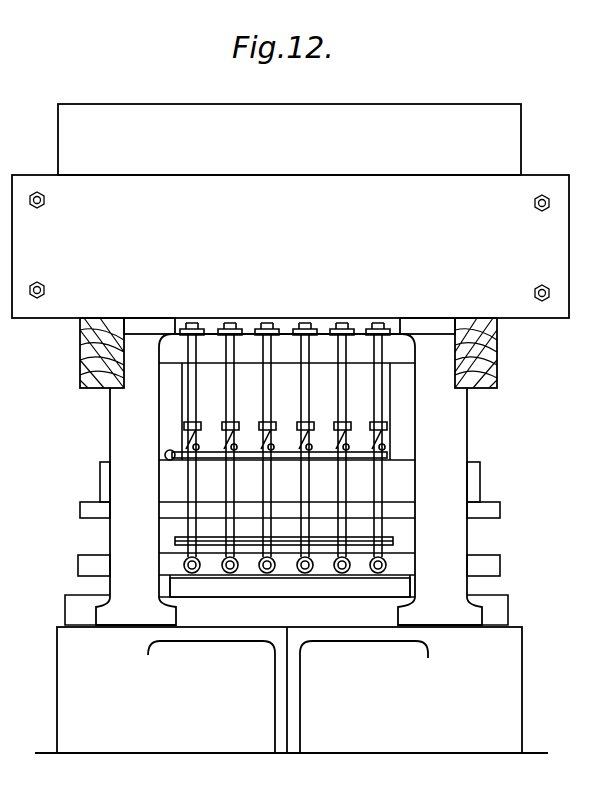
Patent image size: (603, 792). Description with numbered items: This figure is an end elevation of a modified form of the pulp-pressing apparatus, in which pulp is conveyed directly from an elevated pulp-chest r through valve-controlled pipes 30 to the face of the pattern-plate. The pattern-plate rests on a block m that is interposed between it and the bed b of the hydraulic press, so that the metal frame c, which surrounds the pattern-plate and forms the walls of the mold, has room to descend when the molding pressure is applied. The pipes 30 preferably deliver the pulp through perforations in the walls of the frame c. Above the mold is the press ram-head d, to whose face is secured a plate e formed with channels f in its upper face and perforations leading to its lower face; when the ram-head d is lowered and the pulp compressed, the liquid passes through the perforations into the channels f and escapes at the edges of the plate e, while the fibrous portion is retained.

The pulp-chest r is at (290, 246).
The pipes 30 is at (314, 391).
The press ram-head d is at (287, 465).
The plate e is at (395, 541).
The frame c is at (283, 568).
The block m is at (290, 589).
The channels f is at (478, 440).
The bed b is at (291, 690).